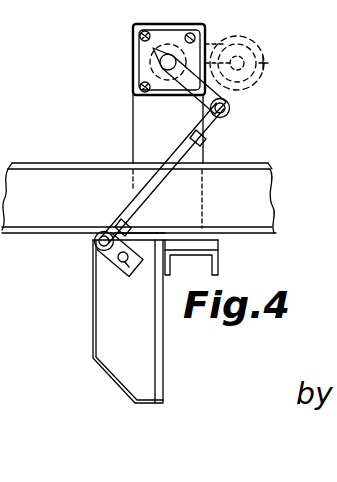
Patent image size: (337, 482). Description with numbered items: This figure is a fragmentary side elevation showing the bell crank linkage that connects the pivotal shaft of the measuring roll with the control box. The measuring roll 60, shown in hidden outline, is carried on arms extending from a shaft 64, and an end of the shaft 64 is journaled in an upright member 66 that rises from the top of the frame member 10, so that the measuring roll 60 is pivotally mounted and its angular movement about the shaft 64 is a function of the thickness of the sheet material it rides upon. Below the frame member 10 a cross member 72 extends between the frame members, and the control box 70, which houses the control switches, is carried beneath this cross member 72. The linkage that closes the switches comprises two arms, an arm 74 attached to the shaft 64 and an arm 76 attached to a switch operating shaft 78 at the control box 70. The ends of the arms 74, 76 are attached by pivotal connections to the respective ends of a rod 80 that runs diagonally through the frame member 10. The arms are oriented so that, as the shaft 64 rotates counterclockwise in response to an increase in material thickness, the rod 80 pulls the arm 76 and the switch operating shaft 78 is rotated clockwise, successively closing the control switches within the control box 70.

The frame member 10 is at (264, 219).
The measuring roll 60 is at (265, 64).
The shaft 64 is at (158, 66).
The upright member 66 is at (135, 115).
The control box 70 is at (110, 324).
The cross member 72 is at (218, 262).
The arm 74 is at (231, 107).
The arm 76 is at (95, 257).
The switch operating shaft 78 is at (104, 266).
The rod 80 is at (140, 190).